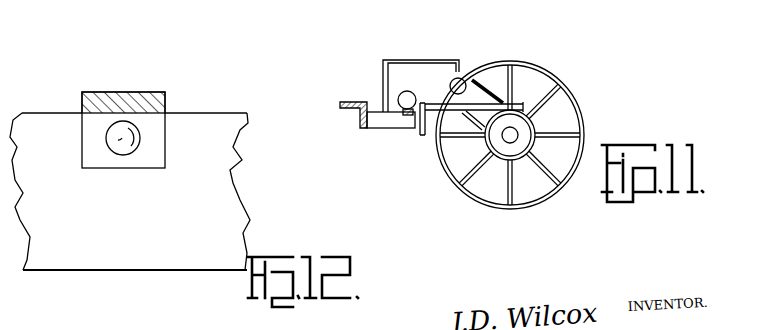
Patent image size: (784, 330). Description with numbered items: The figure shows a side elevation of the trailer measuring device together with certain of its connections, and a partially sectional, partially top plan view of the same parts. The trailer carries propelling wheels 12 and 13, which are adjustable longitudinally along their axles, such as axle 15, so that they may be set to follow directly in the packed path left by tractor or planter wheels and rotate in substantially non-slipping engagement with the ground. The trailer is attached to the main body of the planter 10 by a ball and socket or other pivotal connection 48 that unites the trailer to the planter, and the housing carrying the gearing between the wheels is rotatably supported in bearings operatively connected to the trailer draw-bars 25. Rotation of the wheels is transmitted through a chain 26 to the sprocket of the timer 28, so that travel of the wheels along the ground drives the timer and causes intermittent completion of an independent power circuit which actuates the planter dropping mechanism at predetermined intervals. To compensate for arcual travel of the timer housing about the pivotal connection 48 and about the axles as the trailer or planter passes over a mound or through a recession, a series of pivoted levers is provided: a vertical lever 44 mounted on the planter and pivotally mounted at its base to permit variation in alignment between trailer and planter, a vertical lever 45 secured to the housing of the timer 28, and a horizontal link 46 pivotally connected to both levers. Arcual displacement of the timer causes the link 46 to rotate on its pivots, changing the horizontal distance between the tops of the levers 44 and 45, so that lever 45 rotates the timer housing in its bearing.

In FIG. 12, the main body of the planter 10 is at (215, 121).
In FIG. 11, the propelling wheel 12 is at (400, 87).
In FIG. 11, the propelling wheel 13 is at (540, 68).
In FIG. 11, the axle 15 is at (508, 137).
In FIG. 11, the trailer draw-bar 25 is at (425, 136).
In FIG. 11, the chain 26 is at (475, 81).
In FIG. 11, the timer 28 is at (452, 81).
In FIG. 12, the vertical lever 44 is at (125, 97).
In FIG. 11, the vertical lever 44 is at (383, 72).
In FIG. 11, the vertical lever 45 is at (462, 70).
In FIG. 11, the horizontal link 46 is at (419, 59).
In FIG. 11, the ball and socket connection 48 is at (405, 114).